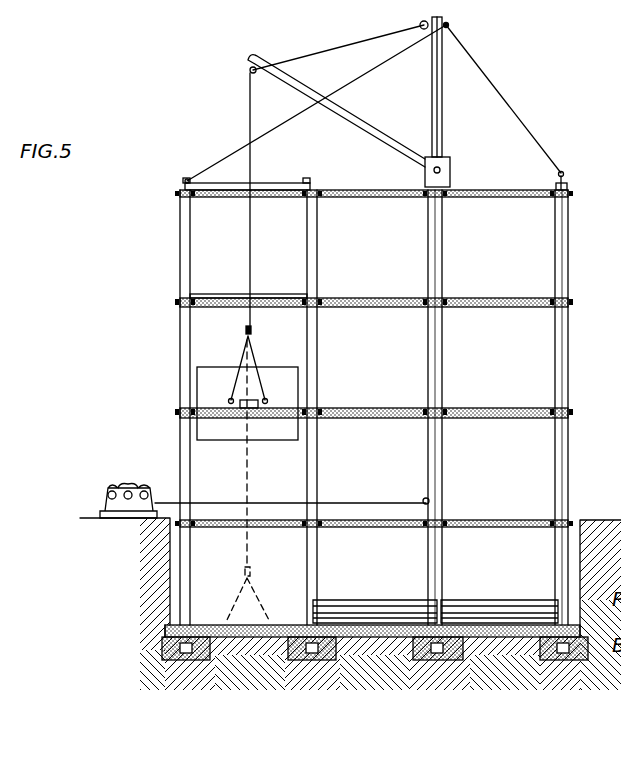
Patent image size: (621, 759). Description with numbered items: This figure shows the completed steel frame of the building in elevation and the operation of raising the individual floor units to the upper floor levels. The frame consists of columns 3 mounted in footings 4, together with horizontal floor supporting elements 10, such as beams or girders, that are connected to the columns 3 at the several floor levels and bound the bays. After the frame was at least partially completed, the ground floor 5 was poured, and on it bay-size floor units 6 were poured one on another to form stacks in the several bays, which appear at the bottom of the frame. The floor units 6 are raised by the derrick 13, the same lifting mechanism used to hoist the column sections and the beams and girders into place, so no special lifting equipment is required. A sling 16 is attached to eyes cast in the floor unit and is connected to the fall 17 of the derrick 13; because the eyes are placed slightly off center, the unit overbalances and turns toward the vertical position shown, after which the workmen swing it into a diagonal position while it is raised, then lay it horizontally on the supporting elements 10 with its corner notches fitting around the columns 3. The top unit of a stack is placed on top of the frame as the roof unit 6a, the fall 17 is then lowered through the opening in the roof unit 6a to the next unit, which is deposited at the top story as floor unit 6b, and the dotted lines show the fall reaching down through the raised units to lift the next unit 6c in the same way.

The columns 3 is at (185, 238).
The footings 4 is at (170, 660).
The ground floor 5 is at (368, 640).
The floor units 6 is at (348, 618).
The roof unit 6a is at (291, 180).
The floor unit deposited at top story 6b is at (278, 292).
The floor panel being hoisted 6c is at (207, 392).
The horizontal floor supporting elements 10 is at (497, 520).
The derrick 13 is at (370, 116).
The sling 16 is at (240, 366).
The fall 17 is at (250, 102).